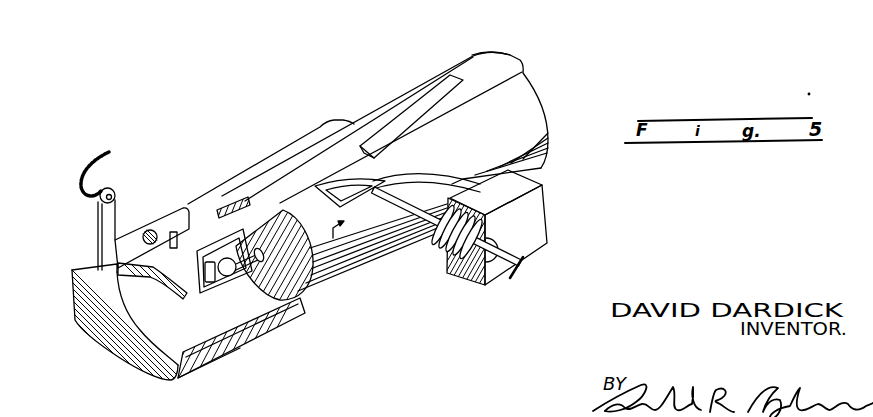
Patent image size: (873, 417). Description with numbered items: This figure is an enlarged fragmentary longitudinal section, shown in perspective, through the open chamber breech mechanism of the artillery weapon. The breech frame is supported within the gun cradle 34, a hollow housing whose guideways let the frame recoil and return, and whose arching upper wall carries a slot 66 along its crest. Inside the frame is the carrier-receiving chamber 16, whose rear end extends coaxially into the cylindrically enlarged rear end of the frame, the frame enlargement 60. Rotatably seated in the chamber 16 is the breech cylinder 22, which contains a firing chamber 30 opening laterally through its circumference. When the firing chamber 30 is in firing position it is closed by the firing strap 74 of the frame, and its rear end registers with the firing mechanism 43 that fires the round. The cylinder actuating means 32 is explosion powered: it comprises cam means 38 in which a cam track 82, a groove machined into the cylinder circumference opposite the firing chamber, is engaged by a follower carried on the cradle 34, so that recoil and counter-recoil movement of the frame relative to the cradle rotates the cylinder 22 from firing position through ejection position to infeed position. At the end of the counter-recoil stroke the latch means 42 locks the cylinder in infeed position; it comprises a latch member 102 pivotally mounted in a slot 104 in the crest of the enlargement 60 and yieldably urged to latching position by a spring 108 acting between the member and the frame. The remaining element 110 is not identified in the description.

The chamber 16 is at (190, 373).
The breech cylinder 22 is at (537, 119).
The firing chamber 30 is at (297, 300).
The cylinder actuating means 32 is at (443, 262).
The gun cradle 34 is at (492, 62).
The cam means 38 is at (420, 226).
The latch means 42 is at (123, 203).
The firing mechanism 43 is at (207, 292).
The frame enlargement 60 is at (260, 337).
The slot 66 is at (400, 104).
The firing strap 74 is at (103, 303).
The cam track 82 is at (457, 160).
The latch member 102 is at (118, 222).
The slot 104 is at (209, 211).
The spring 108 is at (96, 269).
The cord 110 is at (109, 153).